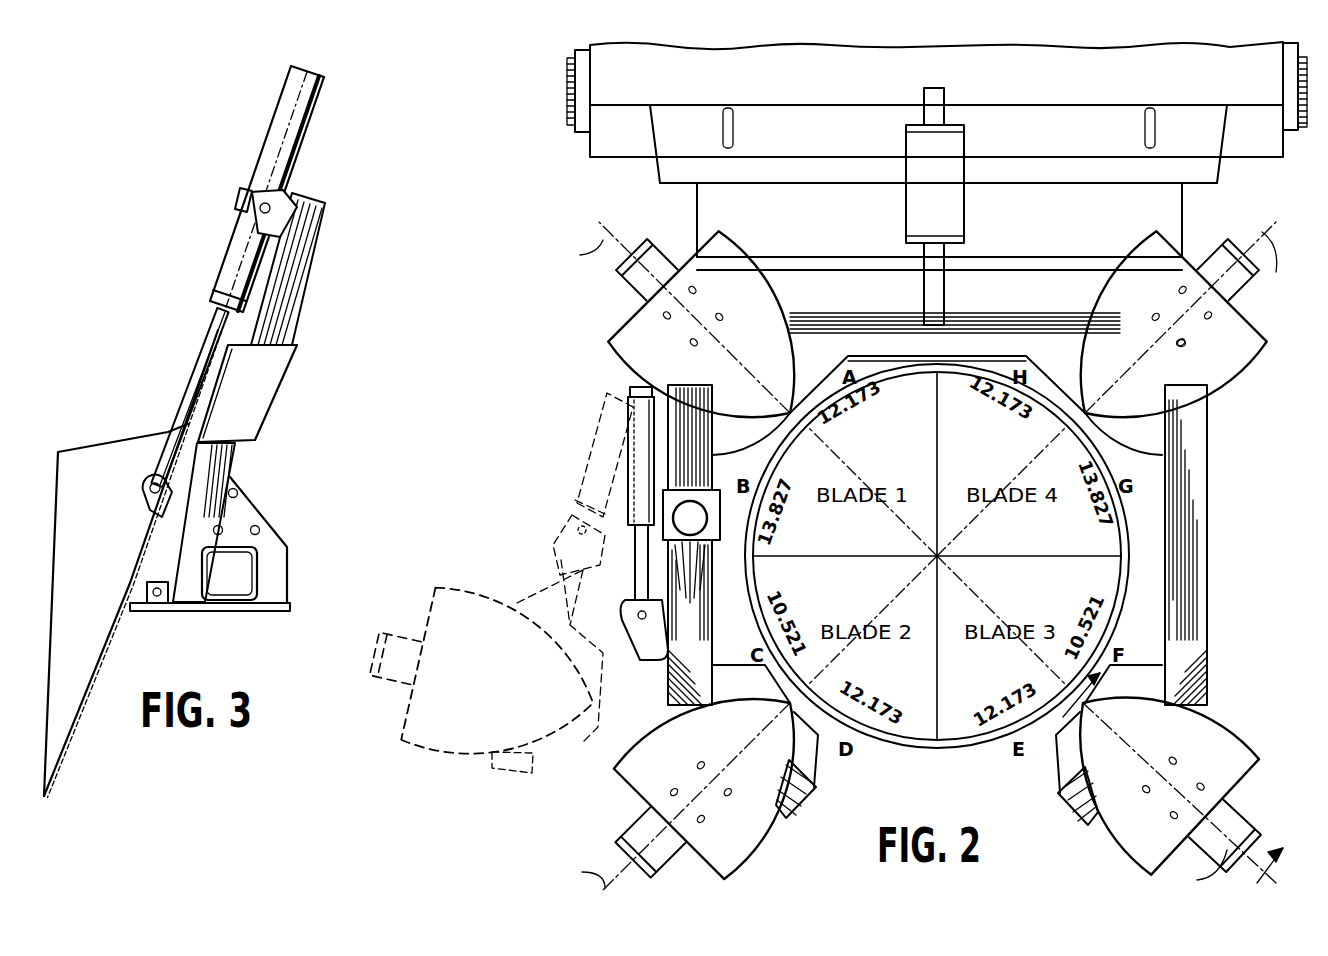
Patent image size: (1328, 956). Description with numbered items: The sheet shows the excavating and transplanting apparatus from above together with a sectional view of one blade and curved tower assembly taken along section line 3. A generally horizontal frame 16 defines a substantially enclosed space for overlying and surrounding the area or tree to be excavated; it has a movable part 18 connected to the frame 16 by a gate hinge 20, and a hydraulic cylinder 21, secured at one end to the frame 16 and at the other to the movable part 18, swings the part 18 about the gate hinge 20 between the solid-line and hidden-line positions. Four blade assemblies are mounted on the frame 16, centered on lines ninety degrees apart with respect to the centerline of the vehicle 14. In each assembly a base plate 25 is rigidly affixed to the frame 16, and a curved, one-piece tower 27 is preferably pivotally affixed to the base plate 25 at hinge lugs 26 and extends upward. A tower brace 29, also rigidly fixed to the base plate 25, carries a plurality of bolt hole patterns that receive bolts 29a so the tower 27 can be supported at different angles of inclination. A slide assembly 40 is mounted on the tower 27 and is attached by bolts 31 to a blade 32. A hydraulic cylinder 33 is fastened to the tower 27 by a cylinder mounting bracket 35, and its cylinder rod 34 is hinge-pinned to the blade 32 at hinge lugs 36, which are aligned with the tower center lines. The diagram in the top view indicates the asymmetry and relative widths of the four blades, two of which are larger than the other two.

In FIG. 2, the section line 3 is at (1162, 785).
In FIG. 2, the vehicle 14 is at (546, 82).
In FIG. 3, the frame 16 is at (258, 578).
In FIG. 2, the frame 16 is at (713, 457).
In FIG. 2, the movable part 18 is at (697, 625).
In FIG. 2, the gate hinge 20 is at (712, 516).
In FIG. 2, the hydraulic cylinder 21 is at (640, 467).
In FIG. 3, the base plate 25 is at (252, 611).
In FIG. 3, the hinge lugs 26 is at (168, 603).
In FIG. 3, the tower 27 is at (313, 240).
In FIG. 3, the tower brace 29 is at (290, 550).
In FIG. 3, the bolts 29a is at (222, 528).
In FIG. 2, the bolts 31 is at (1186, 346).
In FIG. 3, the blade 32 is at (117, 440).
In FIG. 2, the blade 32 is at (612, 340).
In FIG. 3, the hydraulic cylinder 33 is at (316, 95).
In FIG. 3, the cylinder rod 34 is at (198, 363).
In FIG. 3, the cylinder mounting bracket 35 is at (288, 200).
In FIG. 3, the hinge lugs 36 is at (145, 490).
In FIG. 3, the slide assembly 40 is at (300, 388).